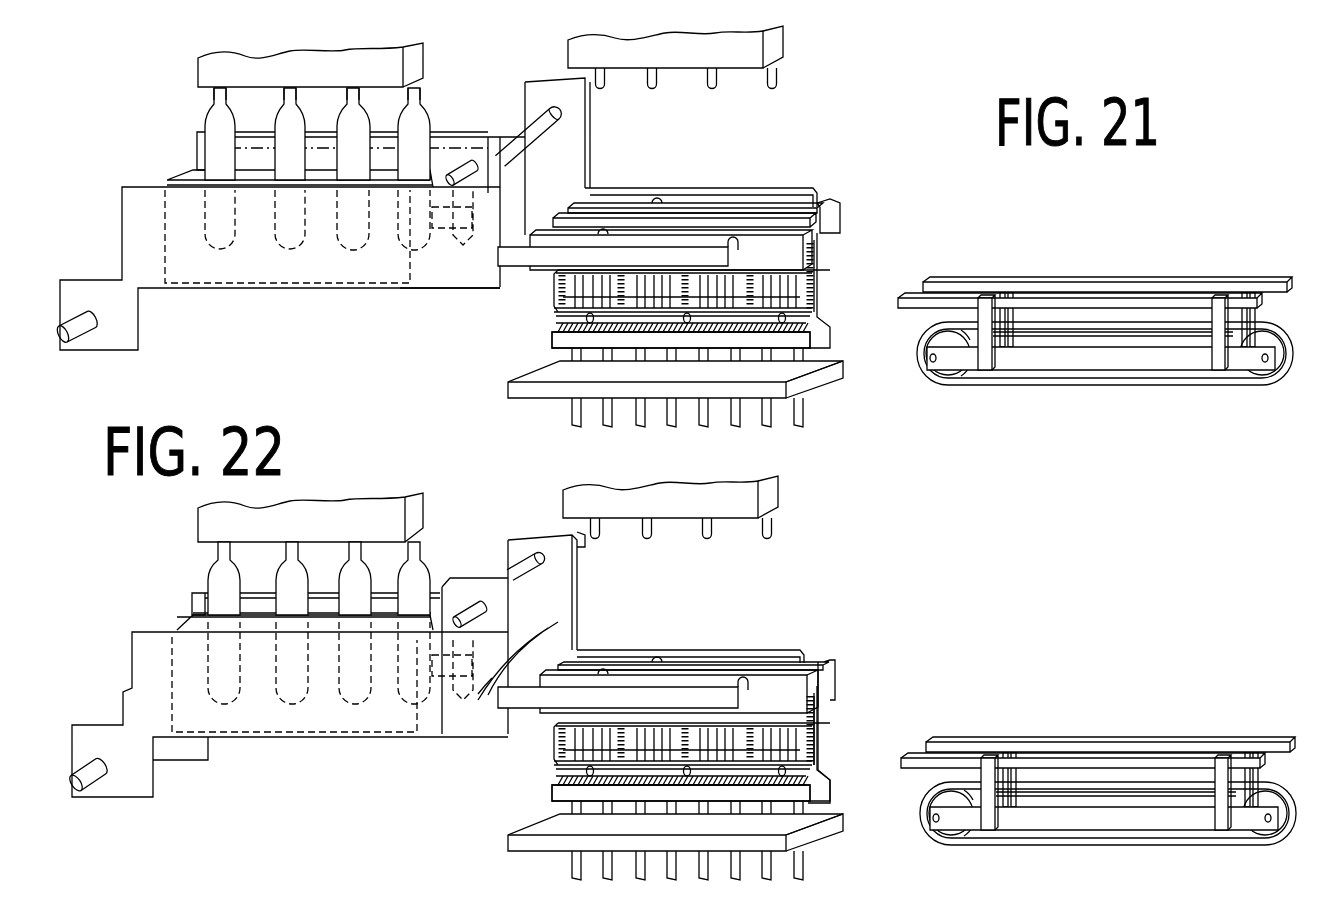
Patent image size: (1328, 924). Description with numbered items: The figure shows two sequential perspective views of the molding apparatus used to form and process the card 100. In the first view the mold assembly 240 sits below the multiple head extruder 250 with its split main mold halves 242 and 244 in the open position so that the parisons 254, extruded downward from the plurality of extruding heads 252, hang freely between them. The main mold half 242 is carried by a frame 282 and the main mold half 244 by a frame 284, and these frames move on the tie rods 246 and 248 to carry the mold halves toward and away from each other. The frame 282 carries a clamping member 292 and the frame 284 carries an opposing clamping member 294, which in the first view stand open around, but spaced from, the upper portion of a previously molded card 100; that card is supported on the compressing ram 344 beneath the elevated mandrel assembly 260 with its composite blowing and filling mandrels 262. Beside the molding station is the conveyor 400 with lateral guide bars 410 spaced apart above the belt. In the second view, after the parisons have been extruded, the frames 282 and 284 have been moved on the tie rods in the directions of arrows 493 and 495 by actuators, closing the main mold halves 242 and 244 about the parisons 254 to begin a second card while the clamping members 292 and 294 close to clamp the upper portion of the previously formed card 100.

In FIG. 21, the card 100 is at (840, 266).
In FIG. 22, the card 100 is at (845, 733).
In FIG. 21, the mold assembly 240 is at (257, 265).
In FIG. 21, the main mold half 242 is at (264, 143).
In FIG. 22, the main mold half 242 is at (260, 603).
In FIG. 21, the main mold half 244 is at (195, 183).
In FIG. 22, the main mold half 244 is at (187, 627).
In FIG. 21, the tie rod 246 is at (57, 323).
In FIG. 21, the tie rod 248 is at (540, 127).
In FIG. 21, the multiple head extruder 250 is at (434, 56).
In FIG. 22, the multiple head extruder 250 is at (438, 499).
In FIG. 21, the extruding heads 252 is at (292, 92).
In FIG. 21, the parisons 254 is at (413, 128).
In FIG. 22, the parisons 254 is at (407, 587).
In FIG. 21, the mandrel assembly 260 is at (800, 44).
In FIG. 21, the composite blowing and filling mandrels 262 is at (762, 82).
In FIG. 22, the composite blowing and filling mandrels 262 is at (790, 494).
In FIG. 21, the frame 282 is at (203, 152).
In FIG. 21, the frame 284 is at (137, 209).
In FIG. 21, the clamping member 292 is at (830, 198).
In FIG. 22, the clamping member 292 is at (828, 672).
In FIG. 21, the clamping member 294 is at (773, 259).
In FIG. 22, the clamping member 294 is at (810, 702).
In FIG. 21, the compressing ram 344 is at (538, 341).
In FIG. 22, the compressing ram 344 is at (527, 792).
In FIG. 21, the conveyor 400 is at (1075, 329).
In FIG. 21, the guide bars 410 is at (946, 284).
In FIG. 22, the arrow 493 is at (478, 694).
In FIG. 22, the arrow 495 is at (537, 643).